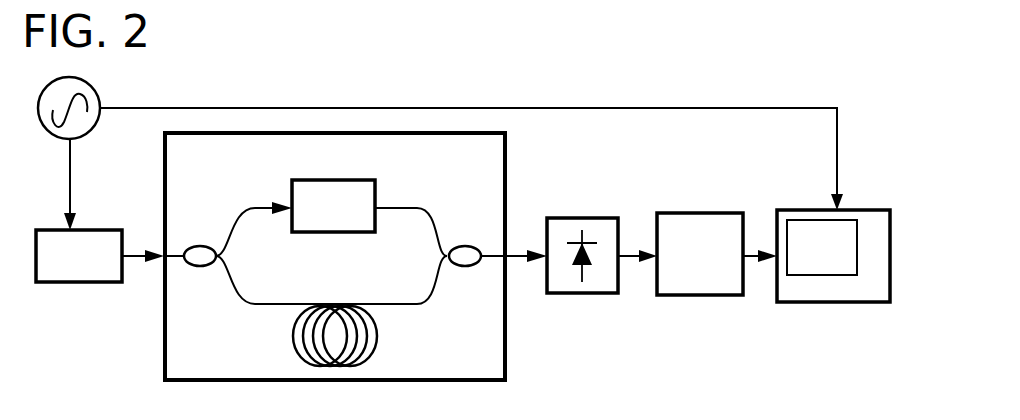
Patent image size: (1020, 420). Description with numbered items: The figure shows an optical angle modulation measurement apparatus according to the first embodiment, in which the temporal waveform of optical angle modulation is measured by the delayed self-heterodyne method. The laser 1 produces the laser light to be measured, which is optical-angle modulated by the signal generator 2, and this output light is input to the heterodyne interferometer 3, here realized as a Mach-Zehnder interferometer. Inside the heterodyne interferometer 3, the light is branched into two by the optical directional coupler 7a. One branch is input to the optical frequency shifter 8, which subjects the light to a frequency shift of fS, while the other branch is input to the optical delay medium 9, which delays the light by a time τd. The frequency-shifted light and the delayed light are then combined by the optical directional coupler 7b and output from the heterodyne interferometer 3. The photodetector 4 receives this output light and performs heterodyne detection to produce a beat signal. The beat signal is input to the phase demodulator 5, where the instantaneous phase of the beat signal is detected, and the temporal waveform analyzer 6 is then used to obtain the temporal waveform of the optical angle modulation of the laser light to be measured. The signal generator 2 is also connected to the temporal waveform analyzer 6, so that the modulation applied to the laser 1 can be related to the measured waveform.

The laser 1 is at (65, 282).
The signal generator 2 is at (88, 135).
The heterodyne interferometer 3 is at (505, 202).
The photodetector 4 is at (582, 293).
The phase demodulator 5 is at (710, 295).
The temporal waveform analyzer 6 is at (827, 302).
The optical directional coupler 7a is at (200, 246).
The optical directional coupler 7b is at (465, 246).
The optical frequency shifter 8 is at (330, 232).
The optical delay medium 9 is at (292, 332).